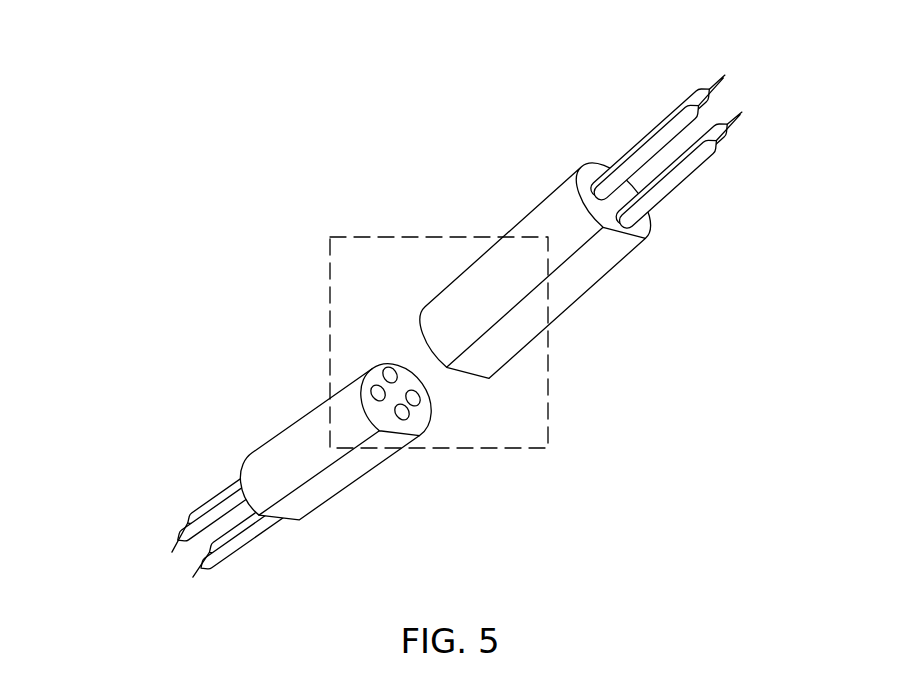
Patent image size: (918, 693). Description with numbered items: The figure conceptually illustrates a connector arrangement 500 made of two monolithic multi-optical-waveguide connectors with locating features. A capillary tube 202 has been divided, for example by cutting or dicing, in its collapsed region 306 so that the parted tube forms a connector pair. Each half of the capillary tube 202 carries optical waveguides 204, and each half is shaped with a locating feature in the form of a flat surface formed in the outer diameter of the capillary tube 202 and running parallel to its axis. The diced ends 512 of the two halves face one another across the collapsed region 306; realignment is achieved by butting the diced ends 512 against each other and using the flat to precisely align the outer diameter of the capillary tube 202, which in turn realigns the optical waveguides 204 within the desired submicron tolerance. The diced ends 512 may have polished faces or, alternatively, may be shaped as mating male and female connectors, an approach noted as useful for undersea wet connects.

The fiber optic connector assembly 500 is at (268, 256).
The capillary tube 202 is at (267, 441).
The optical waveguides 204 is at (657, 124).
The collapsed region 306 is at (318, 330).
The diced ends 512 is at (415, 412).